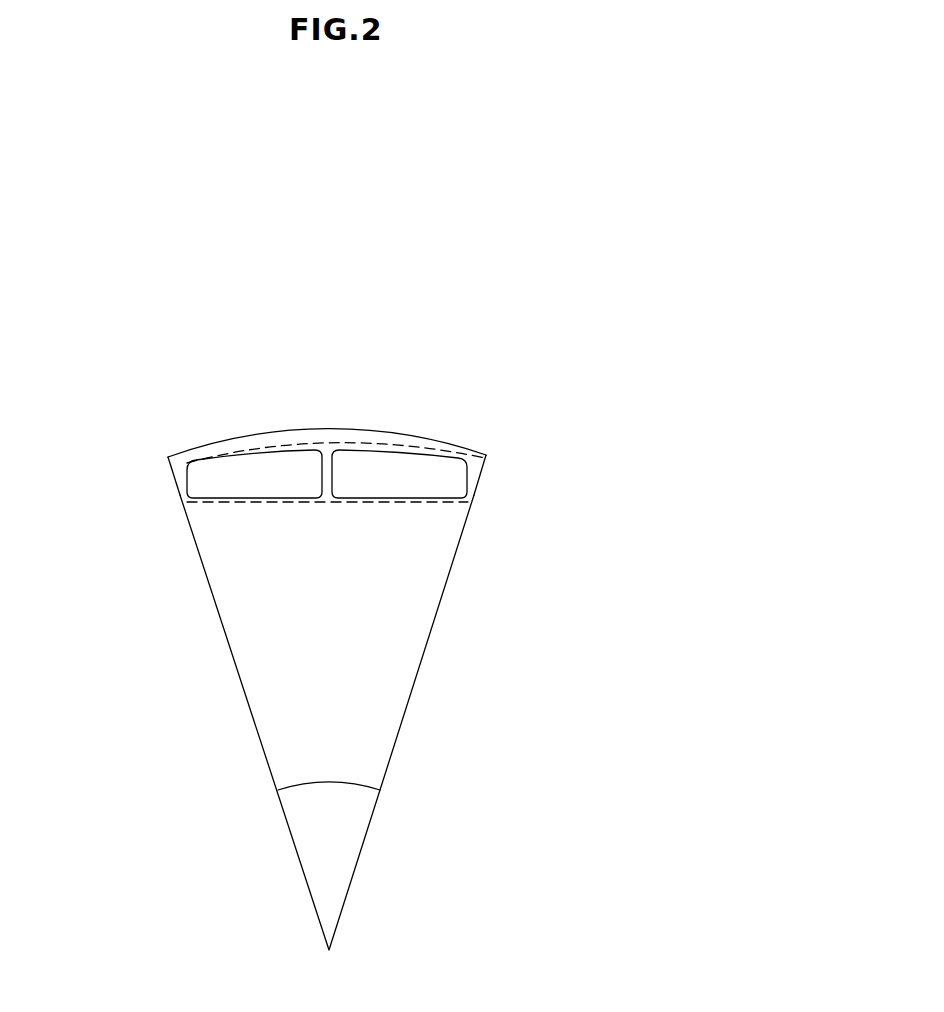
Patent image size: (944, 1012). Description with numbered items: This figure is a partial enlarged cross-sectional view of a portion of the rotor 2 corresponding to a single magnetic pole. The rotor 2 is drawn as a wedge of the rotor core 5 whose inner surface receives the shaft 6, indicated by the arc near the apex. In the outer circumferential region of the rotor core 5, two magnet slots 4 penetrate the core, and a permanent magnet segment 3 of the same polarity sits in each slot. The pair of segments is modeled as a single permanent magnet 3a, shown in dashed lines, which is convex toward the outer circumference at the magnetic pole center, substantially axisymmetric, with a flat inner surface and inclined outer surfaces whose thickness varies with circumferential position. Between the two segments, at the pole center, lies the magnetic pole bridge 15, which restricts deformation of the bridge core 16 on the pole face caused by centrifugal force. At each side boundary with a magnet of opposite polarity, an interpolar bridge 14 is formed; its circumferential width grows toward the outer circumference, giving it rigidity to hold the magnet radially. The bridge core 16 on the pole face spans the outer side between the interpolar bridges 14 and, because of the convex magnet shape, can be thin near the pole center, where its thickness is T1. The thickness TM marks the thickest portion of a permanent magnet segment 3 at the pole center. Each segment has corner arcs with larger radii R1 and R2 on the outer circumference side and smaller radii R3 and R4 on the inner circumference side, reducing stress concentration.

The rotor 2 is at (408, 558).
The permanent magnet segment 3 is at (408, 456).
The permanent magnet 3a is at (334, 415).
The magnet slot 4 is at (378, 435).
The rotor core 5 is at (388, 722).
The shaft 6 is at (388, 825).
The interpolar bridge 14 is at (402, 460).
The magnetic pole bridge 15 is at (520, 543).
The bridge core on pole face 16 is at (412, 392).
The radius R1 is at (332, 412).
The radius R2 is at (172, 434).
The radius R3 is at (130, 545).
The radius R4 is at (248, 578).
The thickness T1 is at (259, 455).
The thickness TM is at (375, 474).